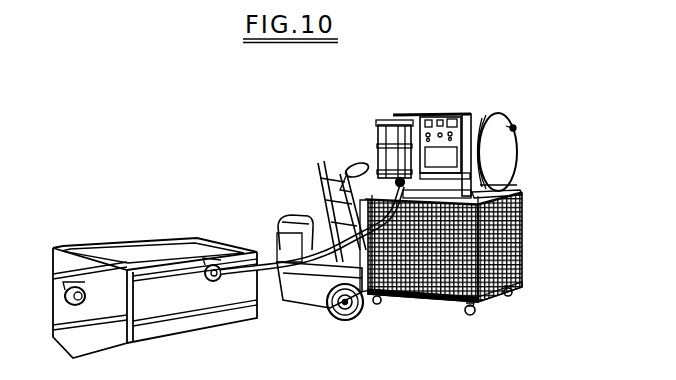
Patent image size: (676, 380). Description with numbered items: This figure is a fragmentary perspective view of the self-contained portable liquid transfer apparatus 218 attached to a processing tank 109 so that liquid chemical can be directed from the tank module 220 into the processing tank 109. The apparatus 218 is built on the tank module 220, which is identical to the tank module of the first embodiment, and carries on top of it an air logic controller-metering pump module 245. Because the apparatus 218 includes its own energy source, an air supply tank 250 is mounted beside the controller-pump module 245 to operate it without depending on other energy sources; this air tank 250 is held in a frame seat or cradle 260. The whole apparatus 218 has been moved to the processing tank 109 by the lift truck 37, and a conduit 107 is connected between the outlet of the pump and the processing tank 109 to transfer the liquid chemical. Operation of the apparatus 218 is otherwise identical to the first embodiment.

The processing tank 109 is at (145, 242).
The conduit 107 is at (266, 262).
The lift truck 37 is at (312, 293).
The air logic controller-metering pump module 245 is at (378, 127).
The air supply tank 250 is at (509, 157).
The frame seat or cradle 260 is at (517, 188).
The self-contained portable liquid transfer apparatus 218 is at (525, 243).
The tank module 220 is at (431, 303).